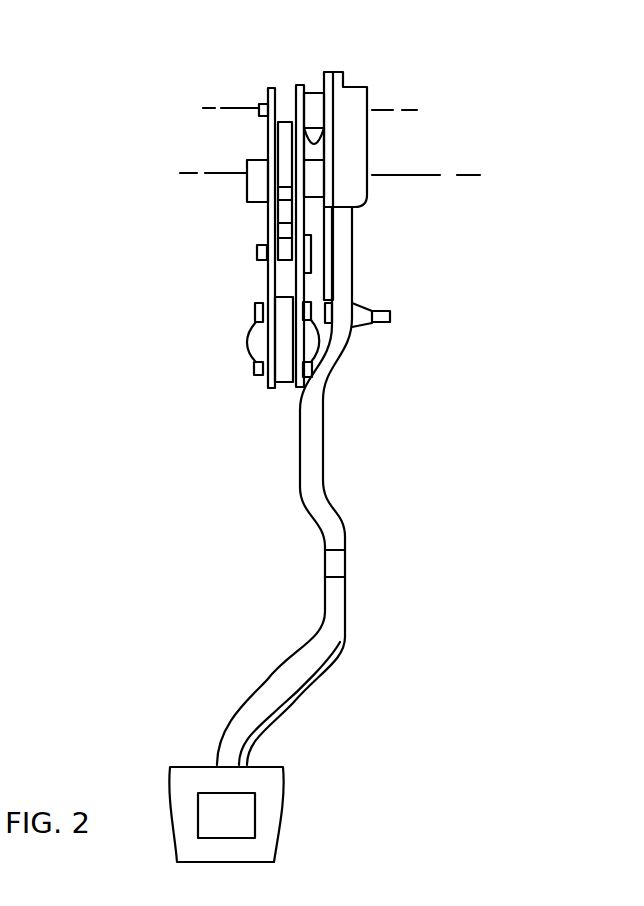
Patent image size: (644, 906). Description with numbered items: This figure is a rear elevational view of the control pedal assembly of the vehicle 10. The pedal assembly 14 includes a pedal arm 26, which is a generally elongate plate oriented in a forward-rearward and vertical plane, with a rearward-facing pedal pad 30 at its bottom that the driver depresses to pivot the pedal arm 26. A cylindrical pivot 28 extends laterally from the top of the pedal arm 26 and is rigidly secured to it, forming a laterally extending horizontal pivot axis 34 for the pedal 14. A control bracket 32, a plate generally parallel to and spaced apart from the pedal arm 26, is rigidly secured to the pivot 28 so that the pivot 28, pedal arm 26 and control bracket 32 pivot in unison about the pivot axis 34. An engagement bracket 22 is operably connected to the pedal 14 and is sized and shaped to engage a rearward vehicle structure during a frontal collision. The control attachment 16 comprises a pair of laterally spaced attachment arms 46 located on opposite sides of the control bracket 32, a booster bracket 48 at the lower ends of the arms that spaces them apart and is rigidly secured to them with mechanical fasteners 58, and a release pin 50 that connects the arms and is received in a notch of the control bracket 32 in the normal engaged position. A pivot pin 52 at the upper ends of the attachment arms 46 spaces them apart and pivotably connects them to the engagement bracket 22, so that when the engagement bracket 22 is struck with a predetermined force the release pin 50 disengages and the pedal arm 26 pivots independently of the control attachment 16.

The vehicle 10 is at (588, 277).
The pedal assembly 14 is at (360, 562).
The control attachment 16 is at (267, 285).
The engagement bracket 22 is at (362, 65).
The pedal arm 26 is at (323, 440).
The pivot 28 is at (253, 203).
The pedal pad 30 is at (283, 810).
The control bracket 32 is at (268, 222).
The pivot axis 34 is at (407, 173).
The attachment arms 46 is at (272, 86).
The booster bracket 48 is at (283, 387).
The release pin 50 is at (313, 253).
The pivot pin 52 is at (323, 88).
The mechanical fasteners 58 is at (255, 372).